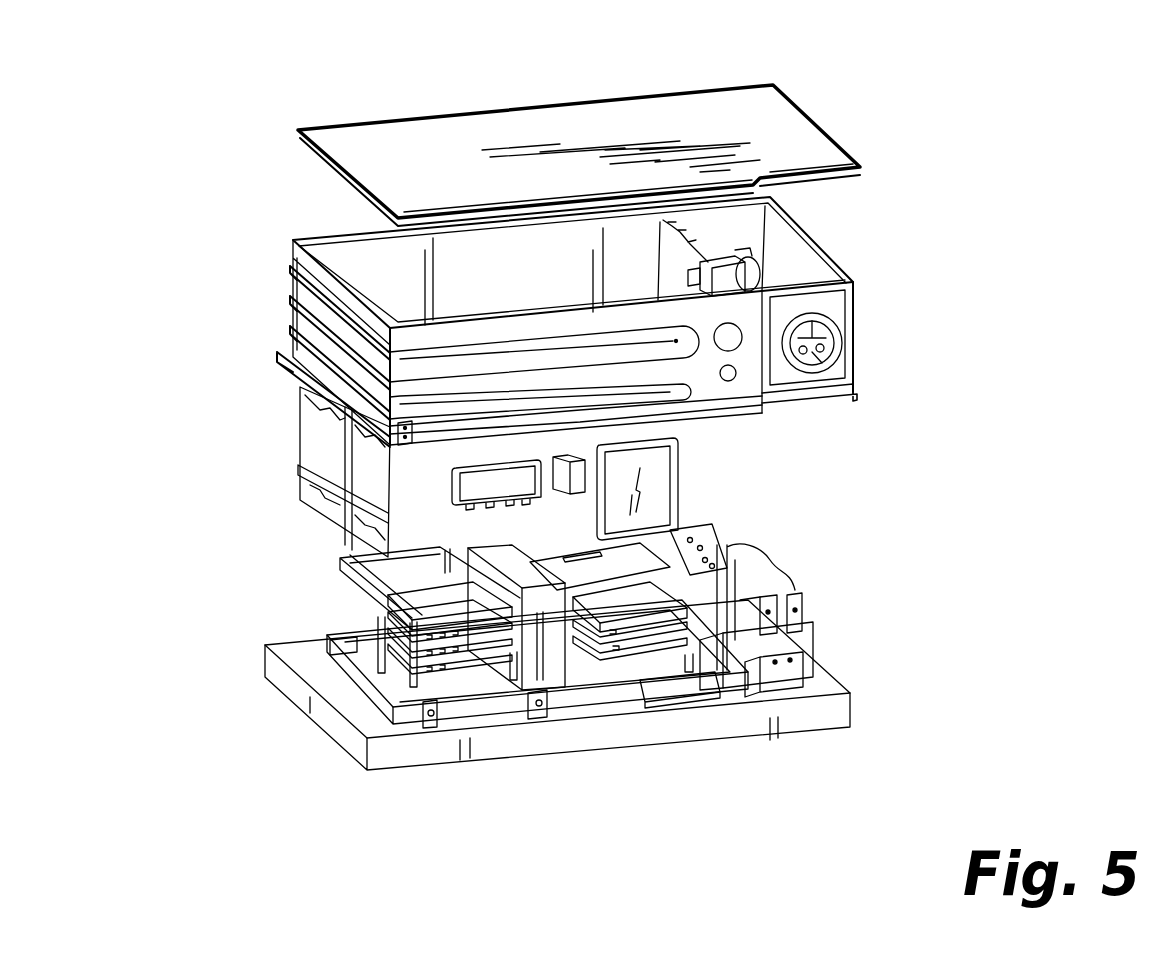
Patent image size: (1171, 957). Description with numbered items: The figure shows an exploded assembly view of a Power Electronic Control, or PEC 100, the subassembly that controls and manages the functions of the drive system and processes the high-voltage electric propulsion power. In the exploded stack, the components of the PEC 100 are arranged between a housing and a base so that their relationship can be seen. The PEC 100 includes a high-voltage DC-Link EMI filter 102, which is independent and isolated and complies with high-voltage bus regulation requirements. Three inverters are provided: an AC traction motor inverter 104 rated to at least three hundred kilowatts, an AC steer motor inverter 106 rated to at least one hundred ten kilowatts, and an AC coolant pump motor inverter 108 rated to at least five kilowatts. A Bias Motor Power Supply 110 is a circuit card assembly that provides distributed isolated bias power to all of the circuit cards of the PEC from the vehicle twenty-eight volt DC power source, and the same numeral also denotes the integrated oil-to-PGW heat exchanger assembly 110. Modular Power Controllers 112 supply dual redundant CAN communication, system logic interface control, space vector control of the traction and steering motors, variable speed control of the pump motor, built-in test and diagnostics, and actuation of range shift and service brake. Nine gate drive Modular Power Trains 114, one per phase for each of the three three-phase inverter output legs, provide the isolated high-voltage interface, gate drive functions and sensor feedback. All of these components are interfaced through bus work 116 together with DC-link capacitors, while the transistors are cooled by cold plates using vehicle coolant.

The Power Electronic Control (PEC) 100 is at (925, 178).
The EMI filter 102 is at (793, 574).
The traction motor inverter 104 is at (410, 582).
The steer motor inverter 106 is at (656, 692).
The coolant pump motor inverter 108 is at (504, 488).
The Bias Motor Power Supply (MPS) / heat exchanger assembly 110 is at (660, 472).
The Modular Power Controller (MPC) 112 is at (356, 477).
The gate drive Modular Power Train (MPT) 114 is at (378, 634).
The bus work 116 is at (545, 657).